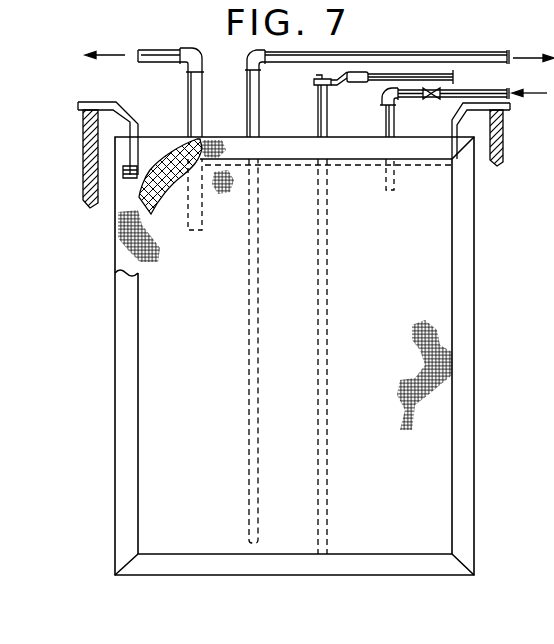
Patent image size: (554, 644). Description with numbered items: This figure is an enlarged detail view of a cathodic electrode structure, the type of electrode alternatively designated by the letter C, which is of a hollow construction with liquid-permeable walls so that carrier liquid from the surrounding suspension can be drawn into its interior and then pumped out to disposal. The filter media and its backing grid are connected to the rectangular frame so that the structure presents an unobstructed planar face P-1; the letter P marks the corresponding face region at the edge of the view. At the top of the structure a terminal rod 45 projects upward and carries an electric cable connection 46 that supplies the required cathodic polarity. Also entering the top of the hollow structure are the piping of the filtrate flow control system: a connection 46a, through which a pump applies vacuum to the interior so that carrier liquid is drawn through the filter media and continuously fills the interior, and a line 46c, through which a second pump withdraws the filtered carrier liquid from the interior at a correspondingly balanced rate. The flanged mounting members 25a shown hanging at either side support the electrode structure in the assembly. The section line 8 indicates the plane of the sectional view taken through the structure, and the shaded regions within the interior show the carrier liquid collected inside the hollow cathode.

The connection 46a is at (152, 51).
The line 46c is at (253, 115).
The electric cable connection 46 is at (455, 78).
The terminal rod 45 is at (327, 117).
The mounting bracket 25a is at (547, 180).
The section line 8- 8 is at (427, 200).
The planar face P-1 is at (232, 366).
The cathodic electrode C is at (367, 302).
The compartment P is at (547, 443).